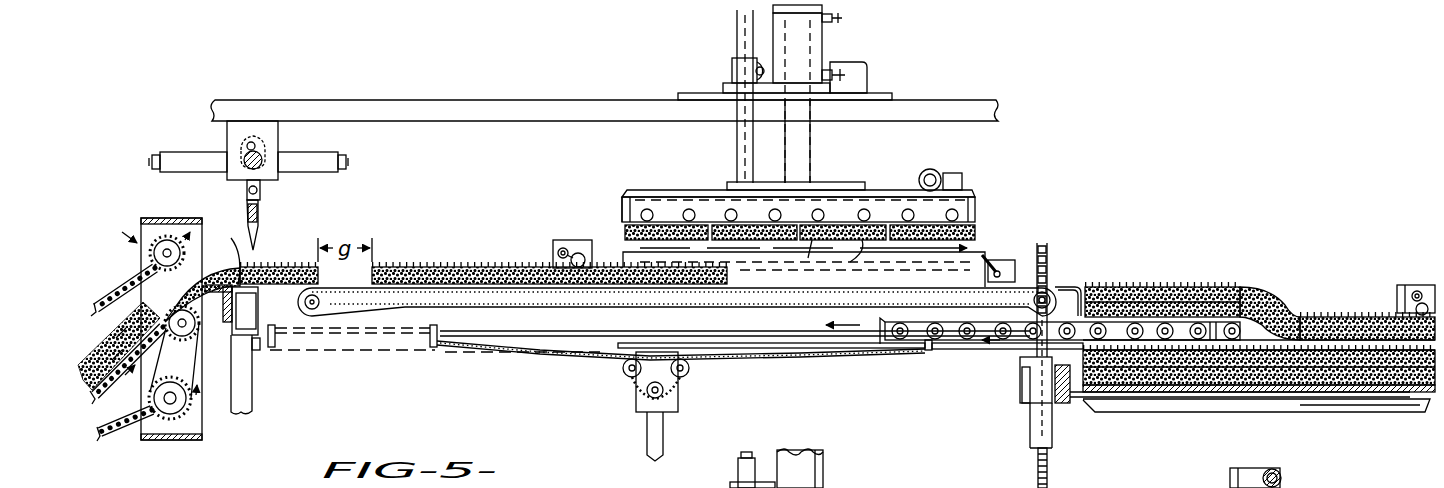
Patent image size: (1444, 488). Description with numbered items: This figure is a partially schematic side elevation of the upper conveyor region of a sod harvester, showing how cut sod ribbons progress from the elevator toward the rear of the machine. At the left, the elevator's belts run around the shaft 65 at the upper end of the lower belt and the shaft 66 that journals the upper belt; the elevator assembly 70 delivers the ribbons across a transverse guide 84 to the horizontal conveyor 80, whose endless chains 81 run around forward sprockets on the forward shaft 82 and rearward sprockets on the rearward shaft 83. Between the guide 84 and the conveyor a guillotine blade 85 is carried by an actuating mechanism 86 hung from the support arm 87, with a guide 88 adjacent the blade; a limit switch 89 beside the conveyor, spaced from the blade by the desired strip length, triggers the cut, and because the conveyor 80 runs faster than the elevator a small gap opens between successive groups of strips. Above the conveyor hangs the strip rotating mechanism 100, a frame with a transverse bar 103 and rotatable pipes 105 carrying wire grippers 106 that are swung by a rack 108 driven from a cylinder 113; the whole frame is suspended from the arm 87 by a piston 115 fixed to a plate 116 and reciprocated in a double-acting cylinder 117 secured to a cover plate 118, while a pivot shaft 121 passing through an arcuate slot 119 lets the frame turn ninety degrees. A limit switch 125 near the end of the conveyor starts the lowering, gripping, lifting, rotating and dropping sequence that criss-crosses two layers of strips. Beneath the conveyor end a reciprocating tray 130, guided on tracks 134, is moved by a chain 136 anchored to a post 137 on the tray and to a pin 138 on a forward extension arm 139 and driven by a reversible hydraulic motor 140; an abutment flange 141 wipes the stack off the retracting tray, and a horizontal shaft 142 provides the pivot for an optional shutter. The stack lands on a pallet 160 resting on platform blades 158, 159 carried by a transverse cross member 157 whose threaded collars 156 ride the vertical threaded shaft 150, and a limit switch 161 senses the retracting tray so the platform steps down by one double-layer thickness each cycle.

The shaft 65 is at (190, 333).
The shaft 66 is at (150, 253).
The feed conveyor 70 is at (140, 329).
The horizontal conveyor 80 is at (400, 314).
The endless chains 81 is at (480, 302).
The forward shaft 82 is at (298, 303).
The rearward shaft 83 is at (1050, 290).
The transverse guide 84 is at (202, 284).
The blade 85 is at (259, 241).
The actuating mechanism 86 is at (277, 183).
The support arm 87 is at (516, 99).
The guide 88 is at (223, 255).
The limit switch 89 is at (568, 240).
The strip rotating mechanism 100 is at (986, 192).
The transverse bar 103 is at (622, 210).
The pipes 105 is at (720, 225).
The wire grippers 106 is at (834, 257).
The rack 108 is at (676, 191).
The cylinder 113 is at (938, 172).
The piston 115 is at (812, 134).
The plate 116 is at (845, 182).
The cylinder 117 is at (825, 44).
The cover plate 118 is at (684, 93).
The arcuate slot 119 is at (731, 95).
The pivot shaft 121 is at (760, 56).
The limit switch 125 is at (1000, 258).
The reciprocating tray 130 is at (968, 342).
The tracks 134 is at (1016, 352).
The chain 136 is at (565, 357).
The post 137 is at (918, 350).
The pin 138 is at (432, 349).
The extension arm 139 is at (515, 338).
The reversible hydraulic motor 140 is at (681, 398).
The abutment flange 141 is at (1083, 288).
The horizontal shaft 142 is at (1282, 478).
The vertical threaded shaft 150 is at (1038, 466).
The threaded collar 156 is at (1030, 423).
The transverse cross member 157 is at (1062, 405).
The platform blade 158 is at (1360, 422).
The platform blade 159 is at (1328, 400).
The pallet 160 is at (1206, 416).
The limit switch 161 is at (1412, 285).